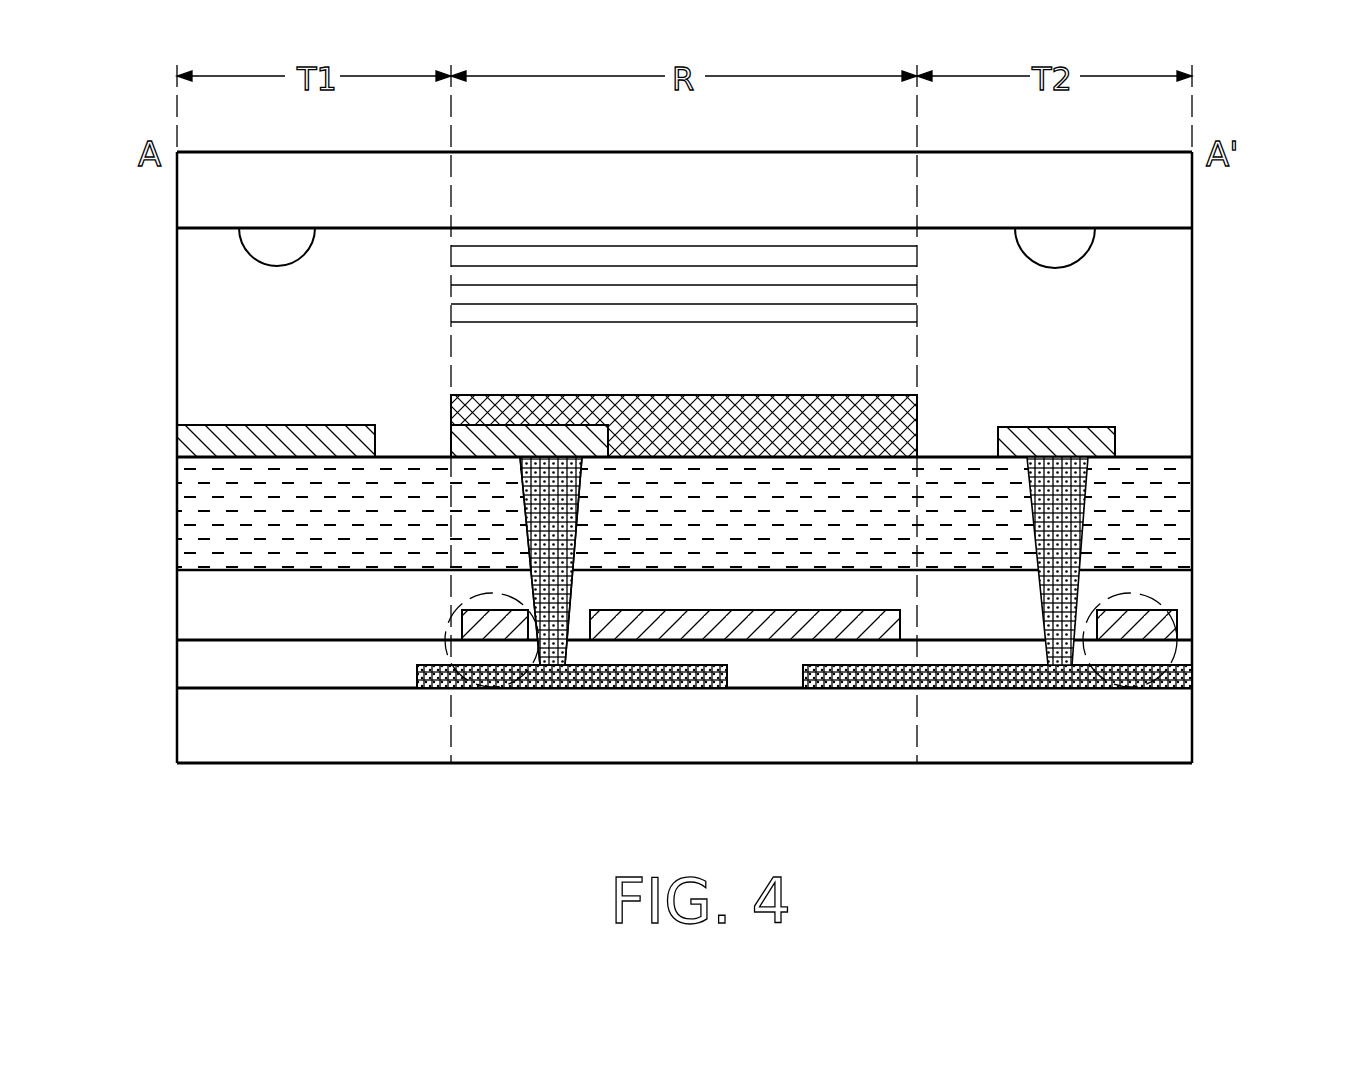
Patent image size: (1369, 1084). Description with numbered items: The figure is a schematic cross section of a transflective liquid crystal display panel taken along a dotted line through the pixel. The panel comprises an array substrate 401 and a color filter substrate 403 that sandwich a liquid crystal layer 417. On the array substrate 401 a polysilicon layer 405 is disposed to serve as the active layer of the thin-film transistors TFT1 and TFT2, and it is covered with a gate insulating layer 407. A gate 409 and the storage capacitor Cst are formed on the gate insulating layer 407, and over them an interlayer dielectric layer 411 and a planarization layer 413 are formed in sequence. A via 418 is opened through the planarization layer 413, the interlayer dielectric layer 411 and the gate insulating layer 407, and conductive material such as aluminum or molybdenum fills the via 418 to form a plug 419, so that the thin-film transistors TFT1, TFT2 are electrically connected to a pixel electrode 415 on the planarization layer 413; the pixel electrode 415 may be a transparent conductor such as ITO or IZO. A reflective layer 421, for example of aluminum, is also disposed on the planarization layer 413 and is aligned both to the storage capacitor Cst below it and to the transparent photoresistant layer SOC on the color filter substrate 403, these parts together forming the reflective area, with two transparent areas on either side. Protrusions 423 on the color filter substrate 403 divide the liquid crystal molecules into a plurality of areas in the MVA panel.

The array substrate 401 is at (1180, 728).
The color filter substrate 403 is at (1175, 193).
The polysilicon layer 405 is at (1160, 680).
The gate insulating layer 407 is at (1183, 660).
The gate 409 is at (1182, 615).
The interlayer dielectric layer 411 is at (1160, 606).
The planarization layer 413 is at (1182, 495).
The pixel electrode 415 is at (473, 437).
The liquid crystal layer 417 is at (1178, 345).
The via 418 is at (525, 540).
The plug 419 is at (555, 493).
The reflective layer 421 is at (921, 391).
The protrusions 423 is at (262, 249).
The transparent photoresistant layer SOC is at (895, 293).
The thin-film transistor TFT1 is at (493, 692).
The thin-film transistor TFT2 is at (1133, 692).
The storage capacitor Cst is at (762, 642).